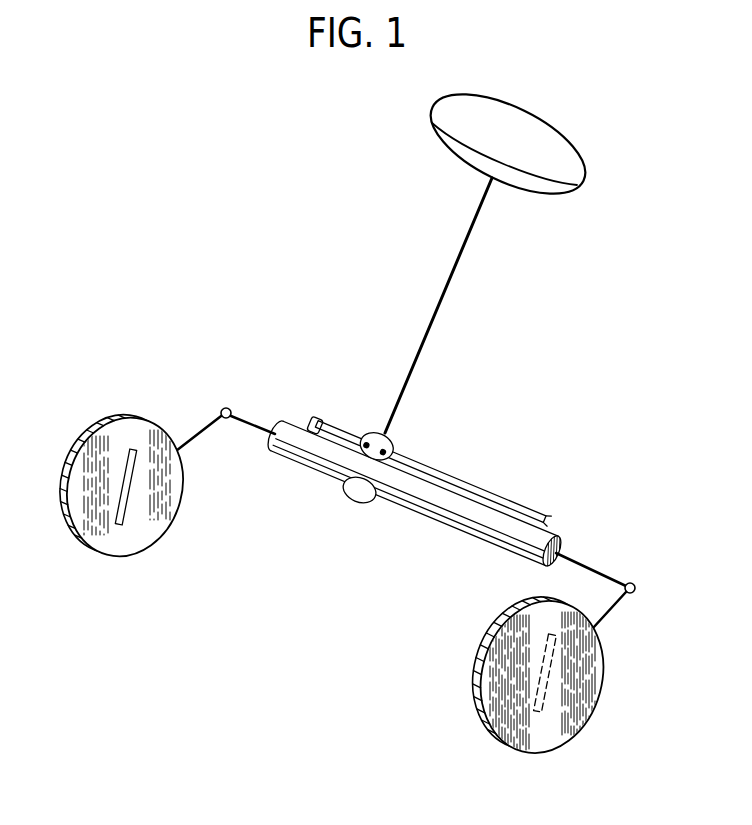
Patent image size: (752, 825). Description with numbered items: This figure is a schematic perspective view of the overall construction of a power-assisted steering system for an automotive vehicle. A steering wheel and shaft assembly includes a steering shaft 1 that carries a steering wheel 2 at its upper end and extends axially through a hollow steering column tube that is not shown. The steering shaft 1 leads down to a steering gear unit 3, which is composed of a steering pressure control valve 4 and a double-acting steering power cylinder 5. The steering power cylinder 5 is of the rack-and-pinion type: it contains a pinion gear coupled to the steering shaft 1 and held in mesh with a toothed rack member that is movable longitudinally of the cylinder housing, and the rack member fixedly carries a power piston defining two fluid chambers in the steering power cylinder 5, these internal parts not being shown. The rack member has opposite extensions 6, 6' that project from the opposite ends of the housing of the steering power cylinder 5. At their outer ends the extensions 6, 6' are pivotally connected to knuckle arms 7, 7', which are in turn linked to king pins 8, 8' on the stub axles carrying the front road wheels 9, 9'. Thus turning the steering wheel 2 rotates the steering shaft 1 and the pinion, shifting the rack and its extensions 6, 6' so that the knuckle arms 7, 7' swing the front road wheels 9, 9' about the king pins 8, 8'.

The steering shaft 1 is at (441, 296).
The steering wheel 2 is at (542, 194).
The steering gear unit 3 is at (387, 559).
The steering pressure control valve 4 is at (391, 434).
The steering power cylinder 5 is at (317, 472).
The rack member extension 6 is at (253, 412).
The knuckle arm 7 is at (181, 443).
The king pin 8 is at (136, 487).
The front road wheel 9 is at (121, 472).
The rack member extension 6' is at (591, 561).
The knuckle arm 7' is at (595, 626).
The king pin 8' is at (525, 679).
The front road wheel 9' is at (538, 675).